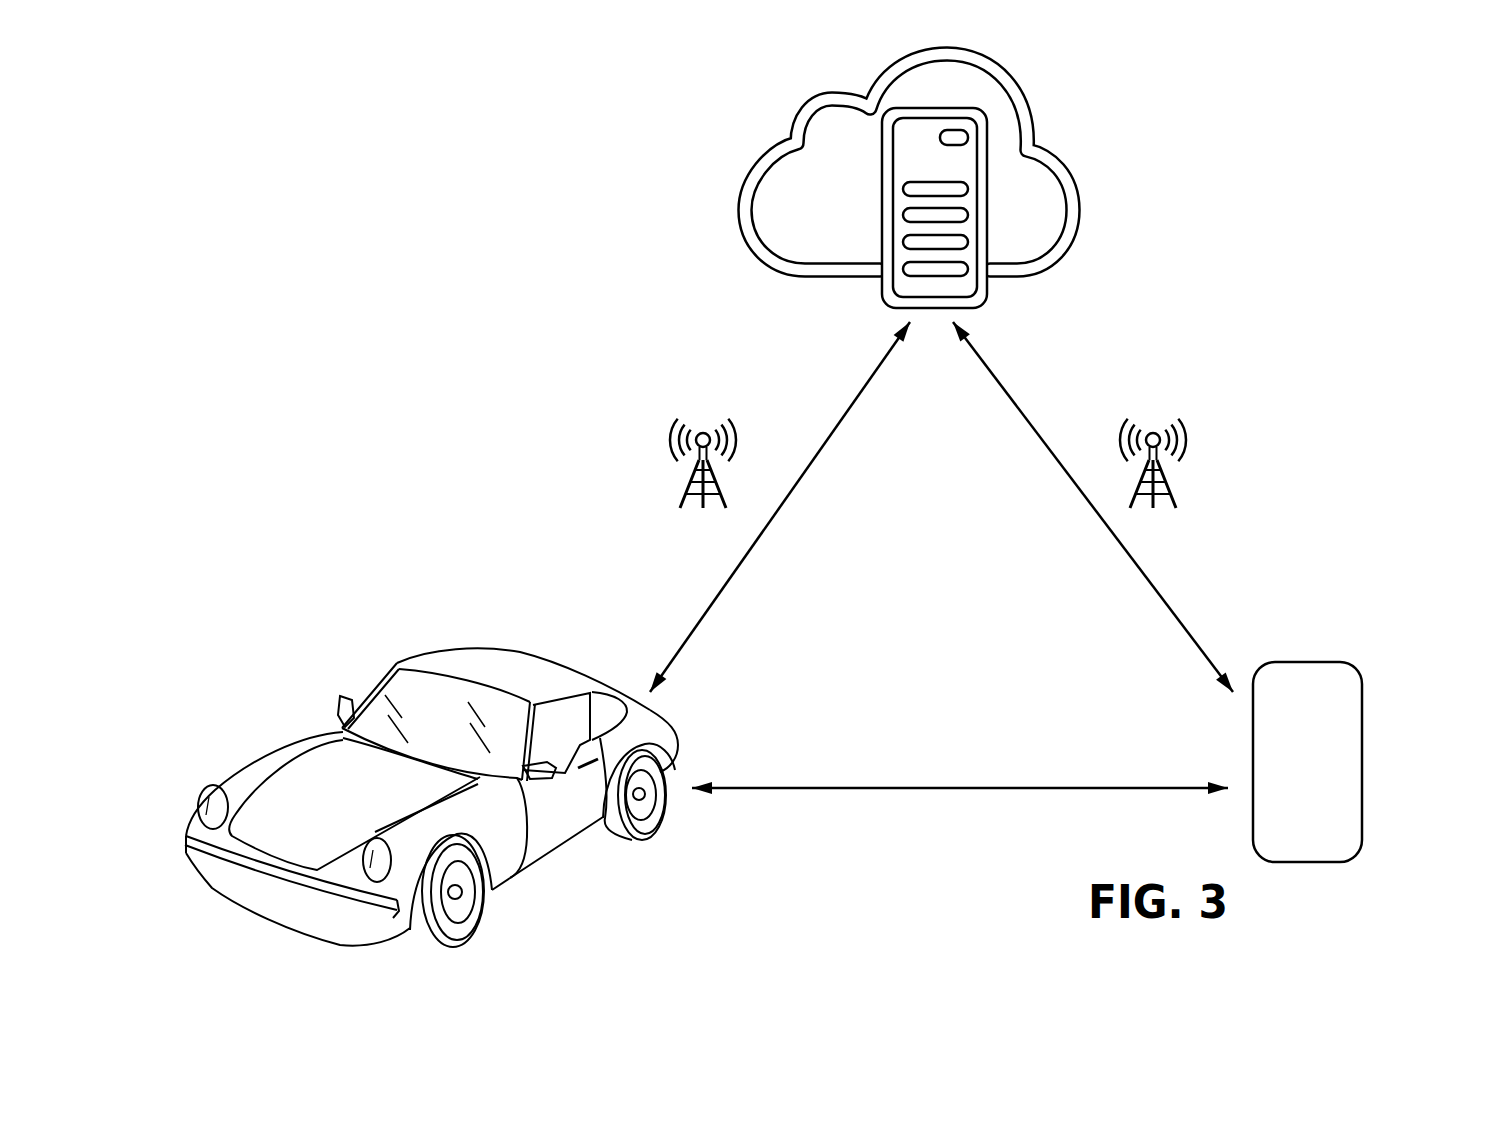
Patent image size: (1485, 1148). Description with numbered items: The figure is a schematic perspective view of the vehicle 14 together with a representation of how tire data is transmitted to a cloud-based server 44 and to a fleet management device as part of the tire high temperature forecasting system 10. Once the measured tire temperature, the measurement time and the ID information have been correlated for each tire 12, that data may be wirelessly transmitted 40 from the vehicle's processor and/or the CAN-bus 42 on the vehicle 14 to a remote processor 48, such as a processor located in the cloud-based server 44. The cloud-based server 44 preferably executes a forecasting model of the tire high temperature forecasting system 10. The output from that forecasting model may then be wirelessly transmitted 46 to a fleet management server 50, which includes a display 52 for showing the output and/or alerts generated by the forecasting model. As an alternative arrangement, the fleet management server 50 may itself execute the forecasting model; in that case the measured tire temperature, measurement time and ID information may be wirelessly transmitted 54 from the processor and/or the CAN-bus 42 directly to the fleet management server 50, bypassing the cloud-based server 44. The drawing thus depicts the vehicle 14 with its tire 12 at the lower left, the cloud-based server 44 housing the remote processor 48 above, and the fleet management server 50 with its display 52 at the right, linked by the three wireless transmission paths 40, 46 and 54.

The tire high temperature forecasting system 10 is at (786, 505).
The tire 12 is at (470, 802).
The vehicle 14 is at (684, 748).
The wireless transmission 40 is at (693, 628).
The CAN-bus 42 is at (245, 882).
The cloud-based server 44 is at (948, 200).
The wireless transmission 46 is at (1143, 573).
The remote processor 48 is at (988, 190).
The fleet management server 50 is at (1359, 737).
The display 52 is at (1332, 712).
The wireless transmission 54 is at (920, 786).